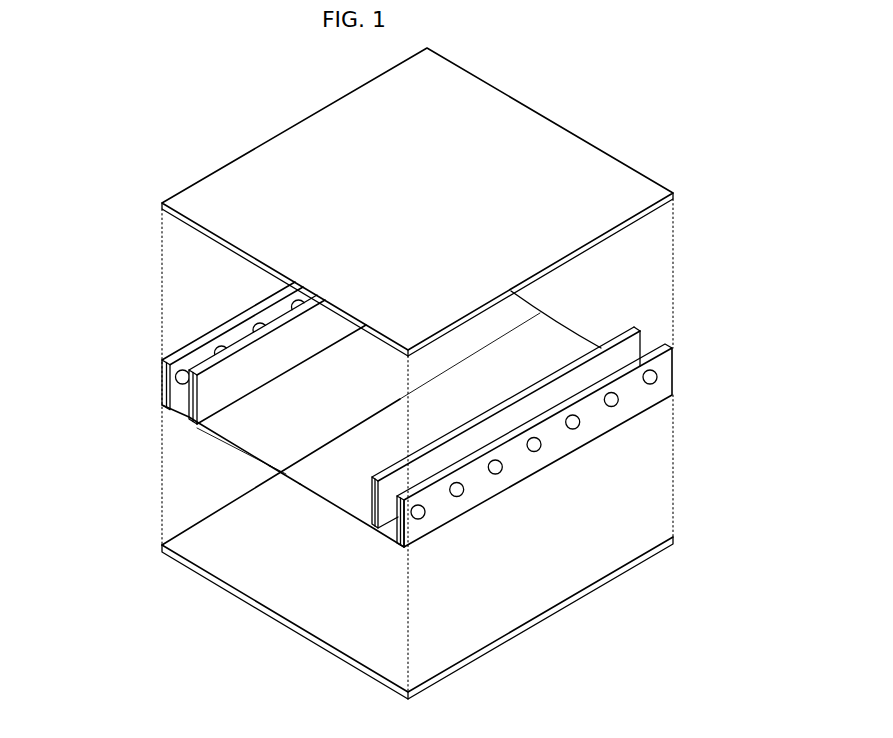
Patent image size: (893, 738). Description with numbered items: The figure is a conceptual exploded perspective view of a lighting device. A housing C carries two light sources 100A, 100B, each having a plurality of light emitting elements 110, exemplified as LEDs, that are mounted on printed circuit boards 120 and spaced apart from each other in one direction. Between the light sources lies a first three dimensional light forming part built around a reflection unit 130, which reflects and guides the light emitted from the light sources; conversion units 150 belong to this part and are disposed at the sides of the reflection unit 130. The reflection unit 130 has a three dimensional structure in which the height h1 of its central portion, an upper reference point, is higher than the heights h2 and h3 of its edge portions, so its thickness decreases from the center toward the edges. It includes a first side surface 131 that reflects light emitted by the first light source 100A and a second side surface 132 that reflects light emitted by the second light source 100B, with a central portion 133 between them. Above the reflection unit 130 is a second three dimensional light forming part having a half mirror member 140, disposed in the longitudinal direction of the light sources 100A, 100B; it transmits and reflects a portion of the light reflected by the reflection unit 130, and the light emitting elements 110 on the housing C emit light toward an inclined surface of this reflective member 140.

The housing C is at (677, 540).
The half mirror member 140 is at (675, 195).
The first light source 100A is at (178, 348).
The second light source 100B is at (676, 376).
The light emitting element 110 is at (163, 392).
The printed circuit board 120 is at (164, 400).
The conversion unit 150 is at (191, 426).
The reflection unit 130 is at (381, 432).
The first side surface 131 is at (257, 463).
The middle portion of bottom sheet 133 is at (285, 477).
The second side surface 132 is at (352, 515).
The height of central portion h1 is at (287, 468).
The height of edge portion h2 is at (196, 424).
The height of edge portion h3 is at (373, 529).